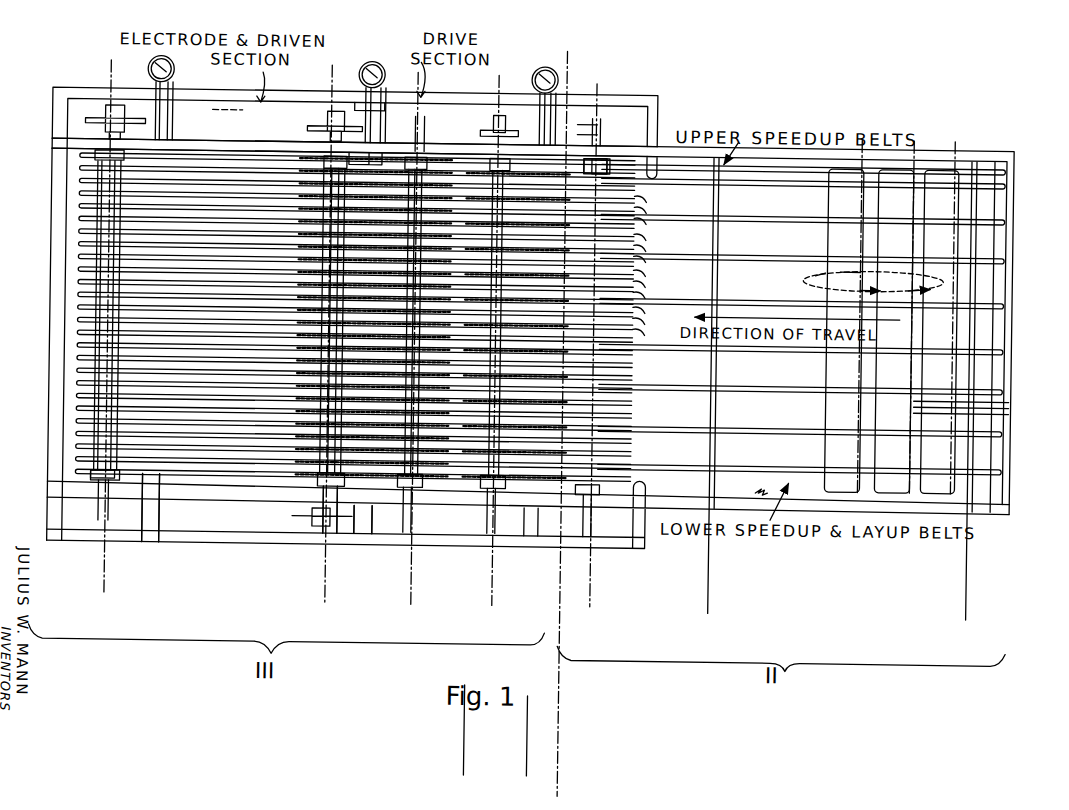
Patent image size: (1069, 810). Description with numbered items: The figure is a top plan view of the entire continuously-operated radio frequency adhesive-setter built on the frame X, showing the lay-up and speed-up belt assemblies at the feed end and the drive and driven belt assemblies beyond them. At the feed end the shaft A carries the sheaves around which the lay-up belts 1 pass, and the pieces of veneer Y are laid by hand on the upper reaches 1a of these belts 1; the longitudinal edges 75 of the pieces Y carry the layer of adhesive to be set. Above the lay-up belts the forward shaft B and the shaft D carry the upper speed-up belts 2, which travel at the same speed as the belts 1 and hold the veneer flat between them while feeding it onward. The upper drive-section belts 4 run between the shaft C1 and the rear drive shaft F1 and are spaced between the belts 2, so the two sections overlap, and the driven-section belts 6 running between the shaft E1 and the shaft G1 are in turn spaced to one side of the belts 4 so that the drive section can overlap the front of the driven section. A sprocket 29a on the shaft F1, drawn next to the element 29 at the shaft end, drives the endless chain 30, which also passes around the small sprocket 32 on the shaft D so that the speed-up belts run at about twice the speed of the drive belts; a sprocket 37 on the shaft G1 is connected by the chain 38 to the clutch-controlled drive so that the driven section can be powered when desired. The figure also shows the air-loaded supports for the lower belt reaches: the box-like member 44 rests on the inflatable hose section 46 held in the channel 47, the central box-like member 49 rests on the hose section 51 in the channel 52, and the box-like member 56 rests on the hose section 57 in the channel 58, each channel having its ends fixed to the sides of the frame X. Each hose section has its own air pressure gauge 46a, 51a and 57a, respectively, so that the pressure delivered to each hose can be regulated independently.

The endless belts 1 is at (1004, 210).
The upper reaches 1a is at (803, 177).
The endless belts 2 is at (743, 325).
The endless belts 4 is at (470, 481).
The endless belts 6 is at (78, 181).
The lower roller shaft nut 29 is at (300, 513).
The sprocket 29a is at (330, 102).
The endless chain 30 is at (410, 120).
The small sprocket 32 is at (522, 108).
The sprocket 37 is at (85, 118).
The endless chain 38 is at (216, 122).
The box-like member 44 is at (546, 166).
The inflatable hose section 46 is at (592, 128).
The air pressure gauge 46a is at (556, 72).
The channel 47 is at (592, 115).
The box-like member 49 is at (384, 100).
The hose section 51 is at (361, 96).
The air pressure gauge 51a is at (366, 66).
The channel 52 is at (363, 545).
The box-like member 56 is at (170, 146).
The hose section 57 is at (172, 108).
The air pressure gauge 57a is at (146, 63).
The channel 58 is at (172, 98).
The longitudinal edges 75 is at (852, 404).
The shaft A is at (978, 166).
The forward shaft B is at (708, 195).
The frame X is at (1012, 272).
The pieces of veneer Y is at (812, 273).
The shaft G1 is at (98, 506).
The rear drive shaft F1 is at (322, 526).
The shaft E1 is at (408, 532).
The shaft D is at (489, 532).
The shaft C1 is at (596, 530).